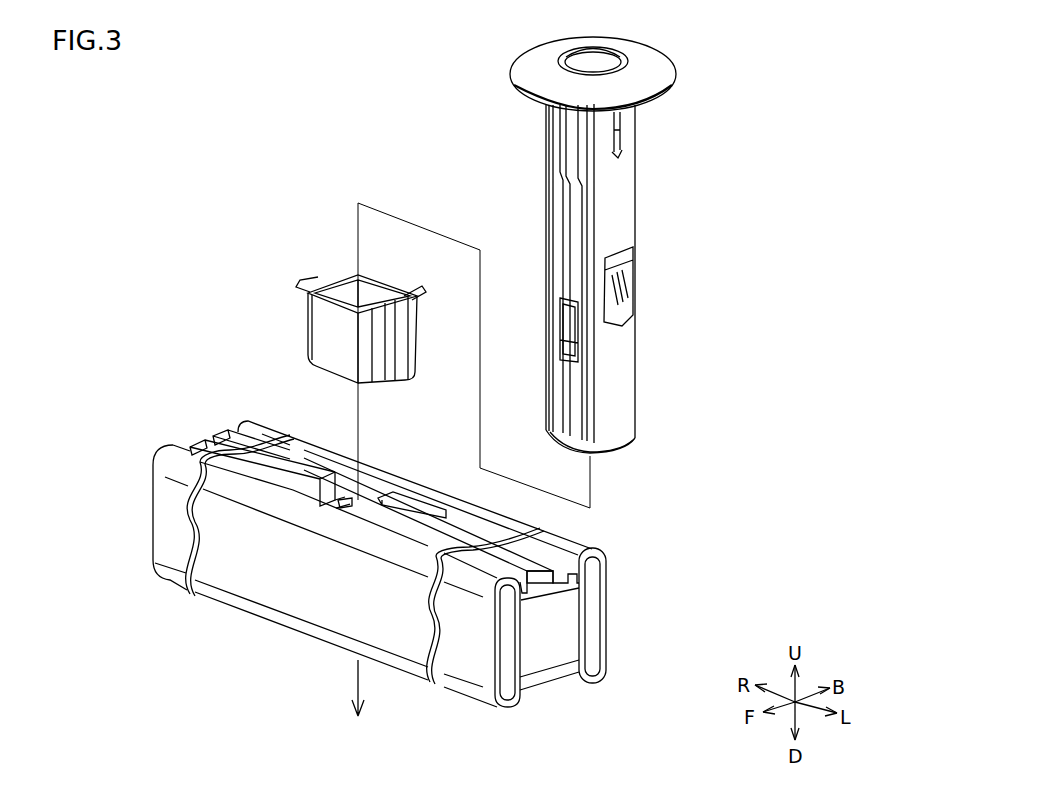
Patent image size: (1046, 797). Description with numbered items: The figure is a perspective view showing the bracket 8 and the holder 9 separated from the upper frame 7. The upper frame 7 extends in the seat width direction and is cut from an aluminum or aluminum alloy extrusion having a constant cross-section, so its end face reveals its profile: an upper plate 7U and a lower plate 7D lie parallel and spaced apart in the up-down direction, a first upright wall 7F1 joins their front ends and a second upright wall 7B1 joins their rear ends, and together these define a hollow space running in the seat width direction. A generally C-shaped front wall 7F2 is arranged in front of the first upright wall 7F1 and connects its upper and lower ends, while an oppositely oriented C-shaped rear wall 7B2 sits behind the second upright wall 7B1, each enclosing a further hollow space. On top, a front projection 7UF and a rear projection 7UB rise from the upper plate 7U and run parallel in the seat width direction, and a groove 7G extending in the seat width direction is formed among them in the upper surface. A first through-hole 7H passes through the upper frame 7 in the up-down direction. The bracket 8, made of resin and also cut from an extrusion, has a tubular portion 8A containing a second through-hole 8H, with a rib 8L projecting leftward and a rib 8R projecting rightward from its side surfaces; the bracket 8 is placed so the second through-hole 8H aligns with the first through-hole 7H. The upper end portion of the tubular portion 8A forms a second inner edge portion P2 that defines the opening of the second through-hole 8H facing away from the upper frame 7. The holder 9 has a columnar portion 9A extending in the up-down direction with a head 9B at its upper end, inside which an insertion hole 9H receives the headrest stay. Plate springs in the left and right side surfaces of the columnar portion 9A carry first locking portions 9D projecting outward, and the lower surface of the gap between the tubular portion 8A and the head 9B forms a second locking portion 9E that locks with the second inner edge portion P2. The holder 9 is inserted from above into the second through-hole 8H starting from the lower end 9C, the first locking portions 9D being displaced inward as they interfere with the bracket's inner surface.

The upper frame 7 is at (252, 622).
The first through-hole 7H is at (345, 504).
The groove 7G is at (520, 552).
The rear projection 7UB is at (568, 572).
The upper plate 7U is at (535, 582).
The front projection 7UF is at (540, 588).
The rear wall 7B2 is at (605, 626).
The second upright wall 7B1 is at (583, 636).
The lower plate 7D is at (545, 672).
The front wall 7F2 is at (497, 630).
The first upright wall 7F1 is at (515, 645).
The bracket 8 is at (386, 276).
The second through-hole 8H is at (347, 298).
The rib 8R is at (318, 285).
The tubular portion 8A is at (330, 332).
The rib 8L is at (408, 340).
The second inner edge portion P2 is at (400, 289).
The holder 9 is at (546, 160).
The insertion hole 9H is at (593, 64).
The head 9B is at (615, 81).
The second locking portion 9E is at (600, 110).
The columnar portion 9A is at (615, 218).
The first locking portion 9D is at (625, 262).
The lower end 9C is at (612, 448).